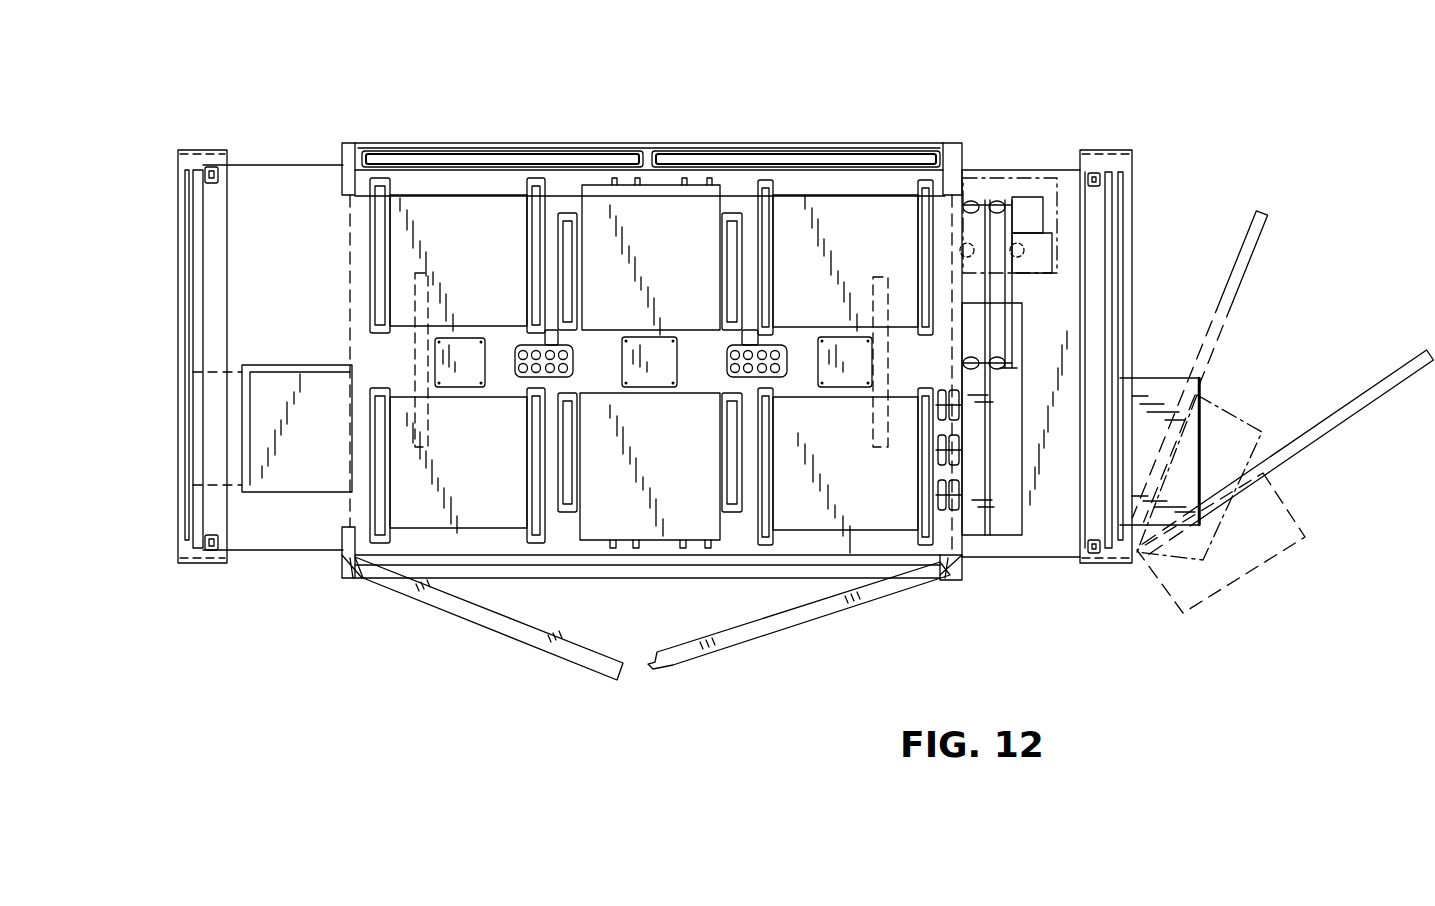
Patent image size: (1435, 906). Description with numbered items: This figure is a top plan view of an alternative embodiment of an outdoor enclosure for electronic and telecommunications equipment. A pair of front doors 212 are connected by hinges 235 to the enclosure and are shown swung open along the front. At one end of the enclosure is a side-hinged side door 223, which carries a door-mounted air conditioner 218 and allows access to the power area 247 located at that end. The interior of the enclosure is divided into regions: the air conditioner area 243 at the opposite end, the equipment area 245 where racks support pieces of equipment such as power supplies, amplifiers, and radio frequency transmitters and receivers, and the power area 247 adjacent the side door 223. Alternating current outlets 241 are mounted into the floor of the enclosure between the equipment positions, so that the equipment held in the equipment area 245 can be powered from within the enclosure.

The front doors 212 is at (510, 637).
The door-mounted air conditioner 218 is at (1150, 388).
The side door 223 is at (1262, 250).
The hinges 235 is at (350, 562).
The alternating current (A-C) outlets 241 is at (518, 346).
The air conditioner area 243 is at (277, 192).
The equipment area 245 is at (372, 352).
The power area 247 is at (1052, 310).